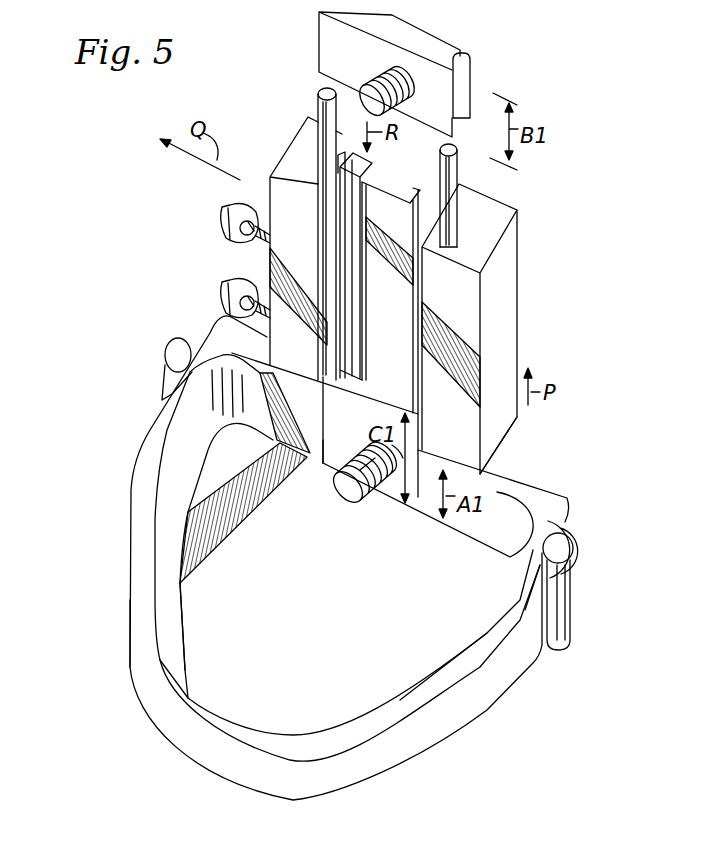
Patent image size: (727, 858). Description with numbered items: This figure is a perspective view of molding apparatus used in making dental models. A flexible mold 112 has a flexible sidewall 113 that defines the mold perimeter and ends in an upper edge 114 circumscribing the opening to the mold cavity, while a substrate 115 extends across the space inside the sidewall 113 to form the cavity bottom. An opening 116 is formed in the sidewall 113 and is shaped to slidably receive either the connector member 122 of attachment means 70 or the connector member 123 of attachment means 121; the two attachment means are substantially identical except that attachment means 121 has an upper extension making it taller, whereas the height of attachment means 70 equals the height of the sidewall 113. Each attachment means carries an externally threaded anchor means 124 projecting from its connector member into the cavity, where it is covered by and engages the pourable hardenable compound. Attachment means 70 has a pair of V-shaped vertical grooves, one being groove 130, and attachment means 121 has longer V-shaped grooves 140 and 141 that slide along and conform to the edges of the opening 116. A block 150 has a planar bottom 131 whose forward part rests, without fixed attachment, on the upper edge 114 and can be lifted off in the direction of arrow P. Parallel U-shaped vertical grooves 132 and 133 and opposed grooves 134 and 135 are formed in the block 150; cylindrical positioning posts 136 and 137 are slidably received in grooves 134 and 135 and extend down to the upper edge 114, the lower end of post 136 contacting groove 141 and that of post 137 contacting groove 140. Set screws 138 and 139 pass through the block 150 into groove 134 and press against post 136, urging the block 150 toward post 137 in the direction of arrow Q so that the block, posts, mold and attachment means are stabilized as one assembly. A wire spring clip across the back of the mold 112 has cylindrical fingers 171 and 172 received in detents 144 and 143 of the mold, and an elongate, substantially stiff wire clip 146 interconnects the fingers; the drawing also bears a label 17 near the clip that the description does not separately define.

The attachment means 70 is at (310, 35).
The connector member 122 is at (353, 53).
The V-shaped groove 130 is at (460, 54).
The anchor means 124 is at (404, 92).
The positioning post 136 is at (318, 95).
The groove 134 is at (287, 174).
The set screw 138 is at (220, 206).
The set screw 139 is at (220, 281).
The groove 132 is at (372, 175).
The V-shaped groove 141 is at (379, 268).
The groove 133 is at (413, 314).
The V-shaped groove 140 is at (355, 362).
The block 150 is at (538, 312).
The positioning post 137 is at (458, 166).
The groove 135 is at (450, 244).
The planar bottom 131 is at (497, 463).
The opening 116 is at (420, 488).
The attachment means 121 is at (335, 456).
The connector member 123 is at (392, 490).
The flexible mold 112 is at (115, 523).
The flexible sidewall 113 is at (128, 642).
The substrate 115 is at (250, 657).
The upper edge 114 is at (447, 648).
The cylindrical finger 171 is at (165, 352).
The detent 144 is at (163, 398).
The locking pin 17 is at (578, 533).
The wire clip 146 is at (582, 576).
The cylindrical finger 172 is at (560, 647).
The detent 143 is at (535, 555).